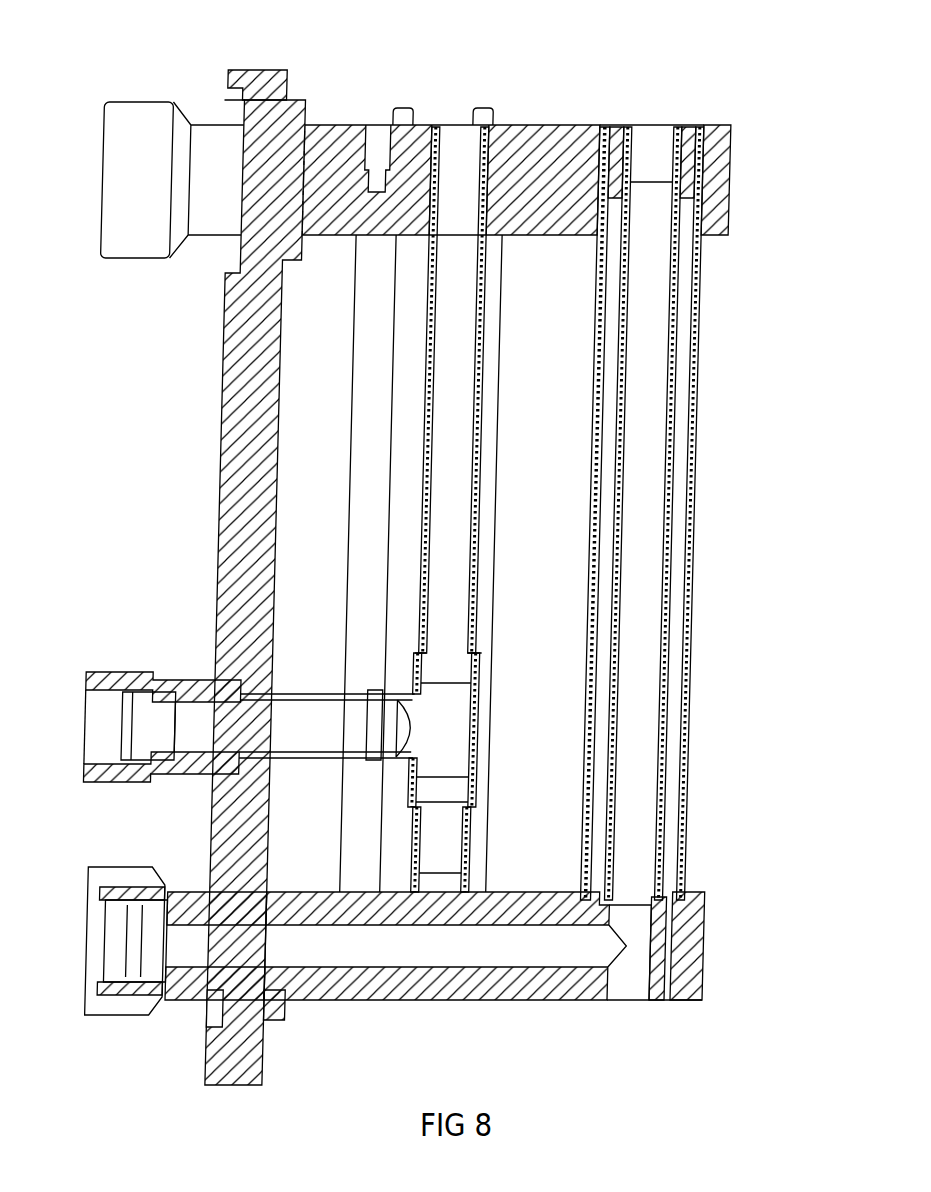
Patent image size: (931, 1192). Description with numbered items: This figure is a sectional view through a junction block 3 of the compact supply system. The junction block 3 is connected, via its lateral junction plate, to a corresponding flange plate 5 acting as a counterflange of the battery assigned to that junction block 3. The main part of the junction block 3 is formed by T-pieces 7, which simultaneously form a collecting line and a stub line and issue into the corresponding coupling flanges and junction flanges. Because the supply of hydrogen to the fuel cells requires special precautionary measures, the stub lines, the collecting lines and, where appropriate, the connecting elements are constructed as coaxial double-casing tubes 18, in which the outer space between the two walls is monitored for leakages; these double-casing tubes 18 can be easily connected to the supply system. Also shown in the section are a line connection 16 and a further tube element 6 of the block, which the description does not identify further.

The junction block 3 is at (548, 108).
The flange plate 5 is at (268, 68).
The tube 6 is at (648, 371).
The T-piece 7 is at (455, 569).
The fitting 16 is at (86, 942).
The coaxial double-casing tube 18 is at (702, 503).